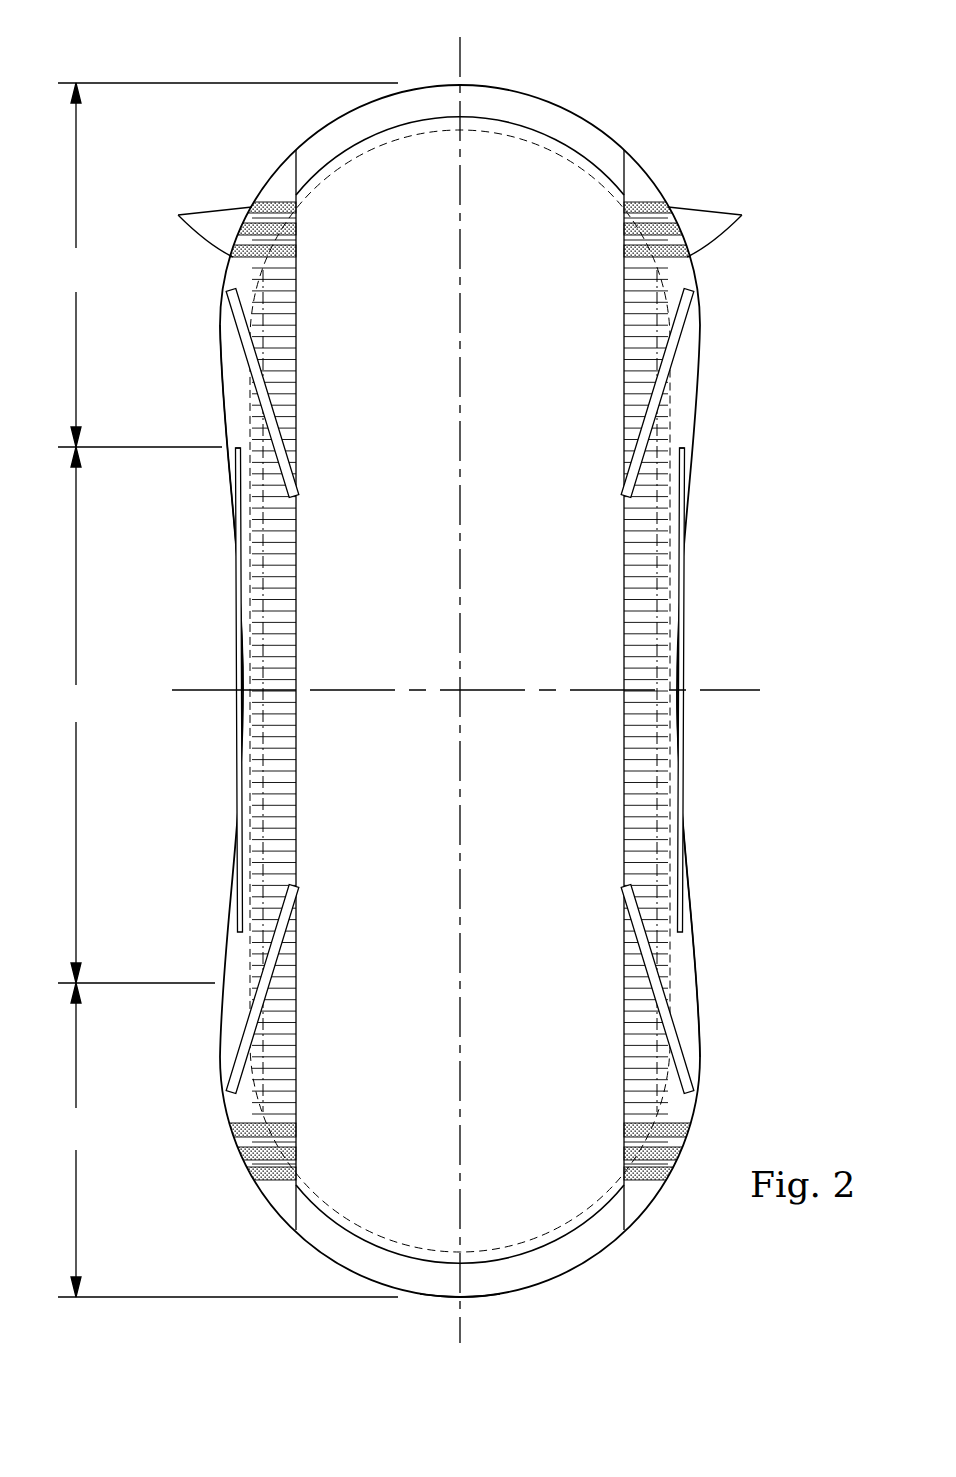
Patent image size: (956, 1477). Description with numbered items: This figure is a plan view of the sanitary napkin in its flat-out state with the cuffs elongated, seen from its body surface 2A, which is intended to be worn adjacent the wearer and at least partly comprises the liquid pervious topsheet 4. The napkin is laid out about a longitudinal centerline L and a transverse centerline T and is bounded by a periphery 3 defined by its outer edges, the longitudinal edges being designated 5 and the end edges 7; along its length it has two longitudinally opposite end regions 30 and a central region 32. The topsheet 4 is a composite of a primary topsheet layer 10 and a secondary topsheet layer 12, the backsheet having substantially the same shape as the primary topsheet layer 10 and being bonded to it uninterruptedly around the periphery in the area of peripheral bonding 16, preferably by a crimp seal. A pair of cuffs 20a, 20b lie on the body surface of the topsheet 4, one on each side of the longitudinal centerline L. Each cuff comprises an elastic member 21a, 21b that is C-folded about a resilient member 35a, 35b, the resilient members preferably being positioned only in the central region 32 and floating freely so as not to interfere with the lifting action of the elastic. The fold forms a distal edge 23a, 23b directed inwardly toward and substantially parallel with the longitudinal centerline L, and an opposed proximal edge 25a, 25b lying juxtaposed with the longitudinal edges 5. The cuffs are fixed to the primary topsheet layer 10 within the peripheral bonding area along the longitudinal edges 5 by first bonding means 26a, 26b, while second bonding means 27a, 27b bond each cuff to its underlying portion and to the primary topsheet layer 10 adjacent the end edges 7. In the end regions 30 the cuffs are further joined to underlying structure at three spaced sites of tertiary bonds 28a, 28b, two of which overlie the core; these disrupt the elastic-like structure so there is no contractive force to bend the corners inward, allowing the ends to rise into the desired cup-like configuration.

The topsheet 4 is at (433, 217).
The primary topsheet layer 10 is at (460, 690).
The periphery 3 is at (231, 508).
The longitudinal edges 5 is at (680, 823).
The end edges 7 is at (528, 1288).
The area of peripheral bonding 16 is at (537, 118).
The secondary topsheet layer 12 is at (658, 287).
The distal edge 23a is at (296, 858).
The distal edge 23b is at (627, 862).
The resilient member 35a is at (272, 492).
The resilient member 35b is at (660, 753).
The tertiary bonds 28a is at (178, 215).
The tertiary bonds 28b is at (742, 215).
The second bonding means 27a is at (282, 1200).
The second bonding means 27b is at (638, 1197).
The elastic member 21a is at (238, 357).
The elastic member 21b is at (688, 352).
The cuff 20a is at (238, 1012).
The cuff 20b is at (680, 1008).
The proximal edge 25a is at (243, 632).
The proximal edge 25b is at (687, 477).
The first bonding means 26a is at (250, 424).
The first bonding means 26b is at (668, 410).
The end regions 30 is at (228, 690).
The central region 32 is at (75, 715).
The transverse centerline T is at (479, 690).
The longitudinal centerline L is at (471, 701).
The body surface 2A is at (545, 395).